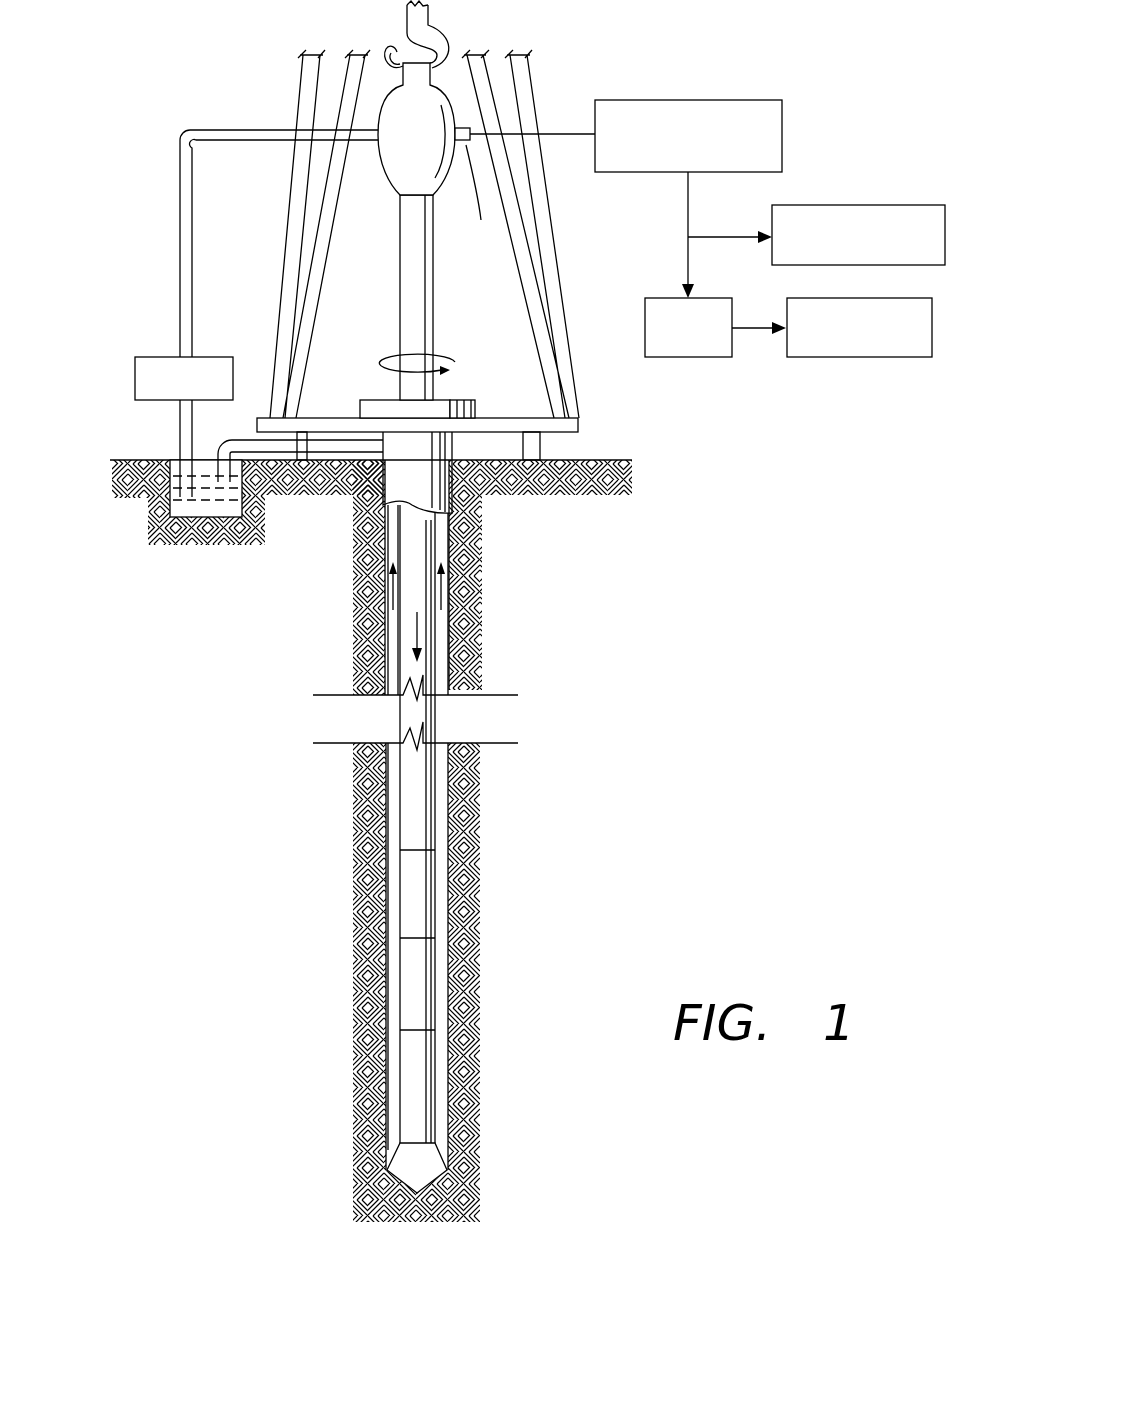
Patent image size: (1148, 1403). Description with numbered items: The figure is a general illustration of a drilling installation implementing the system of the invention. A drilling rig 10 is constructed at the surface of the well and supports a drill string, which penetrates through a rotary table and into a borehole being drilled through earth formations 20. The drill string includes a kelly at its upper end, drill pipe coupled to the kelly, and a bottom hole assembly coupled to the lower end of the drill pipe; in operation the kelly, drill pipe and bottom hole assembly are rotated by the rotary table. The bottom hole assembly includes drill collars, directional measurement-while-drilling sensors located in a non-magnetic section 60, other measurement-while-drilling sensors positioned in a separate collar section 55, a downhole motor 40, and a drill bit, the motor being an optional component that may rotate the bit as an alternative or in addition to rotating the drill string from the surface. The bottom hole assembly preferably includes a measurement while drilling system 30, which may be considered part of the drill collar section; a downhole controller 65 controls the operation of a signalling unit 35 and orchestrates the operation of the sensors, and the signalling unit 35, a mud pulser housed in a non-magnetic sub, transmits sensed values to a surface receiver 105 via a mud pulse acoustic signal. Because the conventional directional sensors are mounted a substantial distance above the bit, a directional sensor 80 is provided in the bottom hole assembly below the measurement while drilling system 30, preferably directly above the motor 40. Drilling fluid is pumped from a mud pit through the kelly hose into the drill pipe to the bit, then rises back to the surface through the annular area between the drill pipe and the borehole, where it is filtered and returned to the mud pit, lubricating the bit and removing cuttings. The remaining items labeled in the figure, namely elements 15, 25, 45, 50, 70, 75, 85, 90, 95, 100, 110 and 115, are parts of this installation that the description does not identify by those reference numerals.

The drilling rig 10 is at (601, 423).
The earth formation / borehole wall 15 is at (447, 792).
The earth formations 20 is at (420, 832).
The drill bit 25 is at (425, 1168).
The measurement while drilling system 30 is at (455, 400).
The signalling unit 35 is at (420, 312).
The downhole motor 40 is at (428, 13).
The swivel 45 is at (395, 172).
The mud pit 50 is at (207, 520).
The separate collar section 55 is at (167, 499).
The non-magnetic section 60 is at (151, 357).
The downhole controller 65 is at (420, 638).
The upward return flow in annulus 70 is at (388, 585).
The borehole 75 is at (347, 835).
The directional sensor 80 is at (428, 1086).
The drill string section / sensor 85 is at (428, 978).
The drill string section / sensor 90 is at (428, 905).
The sensor cable 95 is at (525, 190).
The receiver subsystem 100 is at (682, 100).
The surface receiver 105 is at (665, 357).
The recorder 110 is at (835, 205).
The display 115 is at (830, 357).